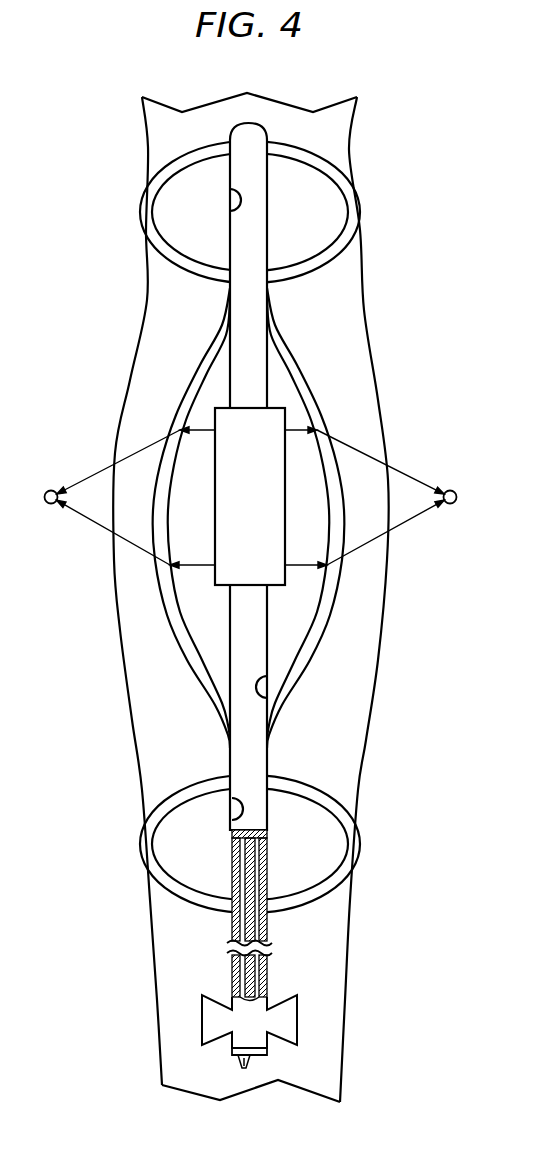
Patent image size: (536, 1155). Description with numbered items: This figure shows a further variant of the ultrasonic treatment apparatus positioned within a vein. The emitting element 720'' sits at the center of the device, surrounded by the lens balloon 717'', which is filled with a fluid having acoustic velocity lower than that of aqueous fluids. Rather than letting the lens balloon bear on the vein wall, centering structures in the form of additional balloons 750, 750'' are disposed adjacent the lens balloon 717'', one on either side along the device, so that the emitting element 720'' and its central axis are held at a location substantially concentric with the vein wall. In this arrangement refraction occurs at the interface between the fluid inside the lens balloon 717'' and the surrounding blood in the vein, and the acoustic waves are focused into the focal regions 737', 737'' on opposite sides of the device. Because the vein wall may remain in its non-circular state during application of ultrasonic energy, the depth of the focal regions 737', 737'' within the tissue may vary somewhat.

The additional balloon 750 is at (285, 197).
The additional balloon 750'' is at (290, 858).
The emitting element 720'' is at (335, 501).
The lens balloon 717'' is at (301, 518).
The focal region 737' is at (106, 497).
The focal region 737'' is at (396, 497).